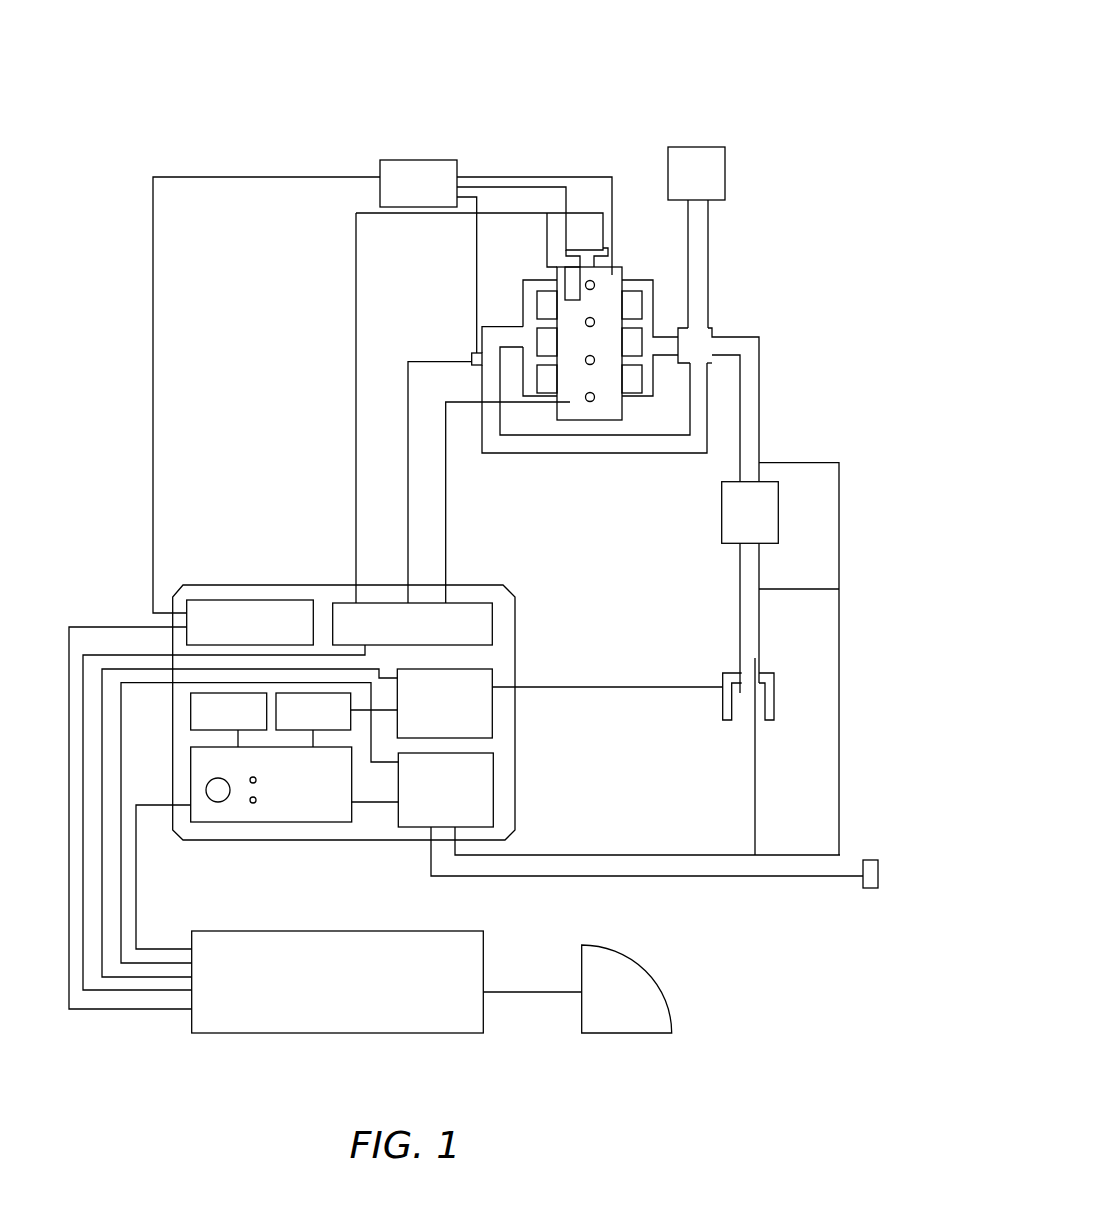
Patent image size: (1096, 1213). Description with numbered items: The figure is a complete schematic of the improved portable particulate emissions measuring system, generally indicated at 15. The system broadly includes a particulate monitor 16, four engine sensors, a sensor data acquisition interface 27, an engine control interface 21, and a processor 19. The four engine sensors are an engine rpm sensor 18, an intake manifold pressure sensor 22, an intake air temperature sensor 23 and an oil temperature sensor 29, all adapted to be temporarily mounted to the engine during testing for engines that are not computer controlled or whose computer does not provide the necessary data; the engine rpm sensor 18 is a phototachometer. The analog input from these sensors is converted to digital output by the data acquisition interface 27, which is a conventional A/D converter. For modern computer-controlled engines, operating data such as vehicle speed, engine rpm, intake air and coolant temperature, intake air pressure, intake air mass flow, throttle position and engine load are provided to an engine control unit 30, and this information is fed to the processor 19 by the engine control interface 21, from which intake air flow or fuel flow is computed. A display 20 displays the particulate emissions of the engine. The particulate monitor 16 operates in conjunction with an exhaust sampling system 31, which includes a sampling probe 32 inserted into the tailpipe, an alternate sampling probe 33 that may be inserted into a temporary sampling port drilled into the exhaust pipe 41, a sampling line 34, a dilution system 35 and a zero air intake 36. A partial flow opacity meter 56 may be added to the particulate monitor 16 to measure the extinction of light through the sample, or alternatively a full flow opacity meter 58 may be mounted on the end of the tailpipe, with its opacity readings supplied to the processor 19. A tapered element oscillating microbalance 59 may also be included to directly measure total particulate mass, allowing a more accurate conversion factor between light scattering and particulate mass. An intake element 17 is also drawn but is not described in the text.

The portable particulate emissions measuring system 15 is at (630, 91).
The particulate monitor 16 is at (295, 784).
The intake air inlet 17 is at (753, 265).
The engine rpm sensor 18 is at (577, 187).
The processor 19 is at (387, 982).
The display 20 is at (627, 989).
The engine control interface 21 is at (271, 429).
The intake manifold pressure sensor 22 is at (450, 332).
The intake air temperature sensor 23 is at (469, 409).
The sensor data acquisition interface 27 is at (413, 624).
The oil temperature sensor 29 is at (543, 447).
The engine control unit 30 is at (382, 386).
The exhaust sampling system 31 is at (857, 738).
The sampling probe 32 is at (791, 655).
The alternate sampling probe 33 is at (806, 566).
The sampling line 34 is at (712, 838).
The dilution system 35 is at (630, 814).
The zero air intake 36 is at (824, 896).
The exhaust pipe 41 is at (793, 402).
The partial flow opacity meter 56 is at (229, 720).
The full flow opacity meter 58 is at (706, 723).
The tapered element oscillating microbalance 59 is at (336, 720).